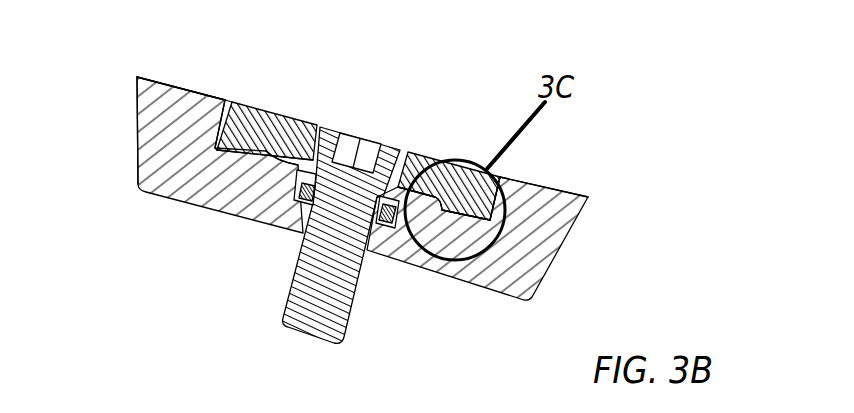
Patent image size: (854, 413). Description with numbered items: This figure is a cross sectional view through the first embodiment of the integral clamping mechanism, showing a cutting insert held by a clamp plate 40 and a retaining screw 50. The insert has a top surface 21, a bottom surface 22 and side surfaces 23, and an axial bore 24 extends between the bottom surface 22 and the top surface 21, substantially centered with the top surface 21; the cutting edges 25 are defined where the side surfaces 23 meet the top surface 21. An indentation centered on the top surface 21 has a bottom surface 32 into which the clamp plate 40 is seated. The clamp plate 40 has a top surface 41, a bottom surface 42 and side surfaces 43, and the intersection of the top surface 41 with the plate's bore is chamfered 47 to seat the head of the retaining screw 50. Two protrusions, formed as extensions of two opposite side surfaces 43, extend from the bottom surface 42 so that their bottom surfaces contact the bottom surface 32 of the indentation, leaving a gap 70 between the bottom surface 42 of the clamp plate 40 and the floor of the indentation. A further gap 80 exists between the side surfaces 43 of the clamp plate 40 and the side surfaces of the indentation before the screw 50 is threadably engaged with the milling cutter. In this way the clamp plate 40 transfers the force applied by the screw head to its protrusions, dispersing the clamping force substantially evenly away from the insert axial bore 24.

The top surface 21 is at (150, 78).
The bottom surface 22 is at (153, 193).
The side surfaces 23 is at (137, 97).
The axial bore 24 is at (382, 240).
The cutting edges 25 is at (137, 75).
The bottom surface of indentation 32 is at (237, 214).
The clamp plate 40 is at (287, 105).
The top surface of clamp plate 41 is at (247, 102).
The bottom surface of clamp plate 42 is at (268, 165).
The side surfaces of clamp plate 43 is at (220, 133).
The chamfer 47 is at (415, 165).
The retaining screw 50 is at (372, 126).
The gap 70 is at (425, 200).
The gap 80 is at (230, 100).